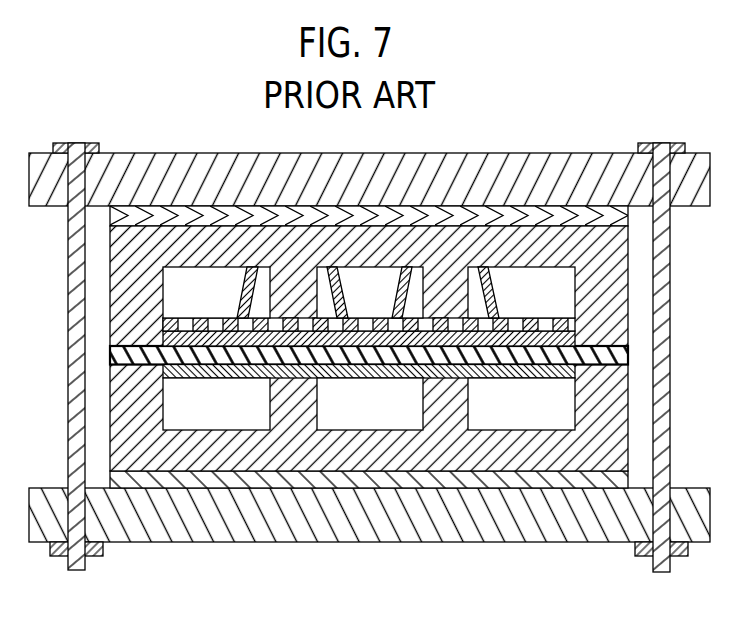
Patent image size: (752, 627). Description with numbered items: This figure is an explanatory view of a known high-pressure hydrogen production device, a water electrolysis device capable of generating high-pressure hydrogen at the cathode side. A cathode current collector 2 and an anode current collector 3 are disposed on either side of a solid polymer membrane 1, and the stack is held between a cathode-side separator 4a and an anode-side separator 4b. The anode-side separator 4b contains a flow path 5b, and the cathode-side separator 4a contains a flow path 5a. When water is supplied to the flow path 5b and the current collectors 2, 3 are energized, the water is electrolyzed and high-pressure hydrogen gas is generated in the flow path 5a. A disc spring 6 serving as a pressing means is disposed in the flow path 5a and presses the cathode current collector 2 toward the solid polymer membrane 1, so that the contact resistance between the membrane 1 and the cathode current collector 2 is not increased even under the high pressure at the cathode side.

The solid polymer membrane 1 is at (627, 355).
The cathode current collector 2 is at (575, 342).
The anode current collector 3 is at (575, 367).
The cathode-side separator 4a is at (615, 283).
The anode-side separator 4b is at (613, 405).
The flow path 5a is at (518, 263).
The flow path 5b is at (517, 431).
The disc spring 6 is at (352, 303).